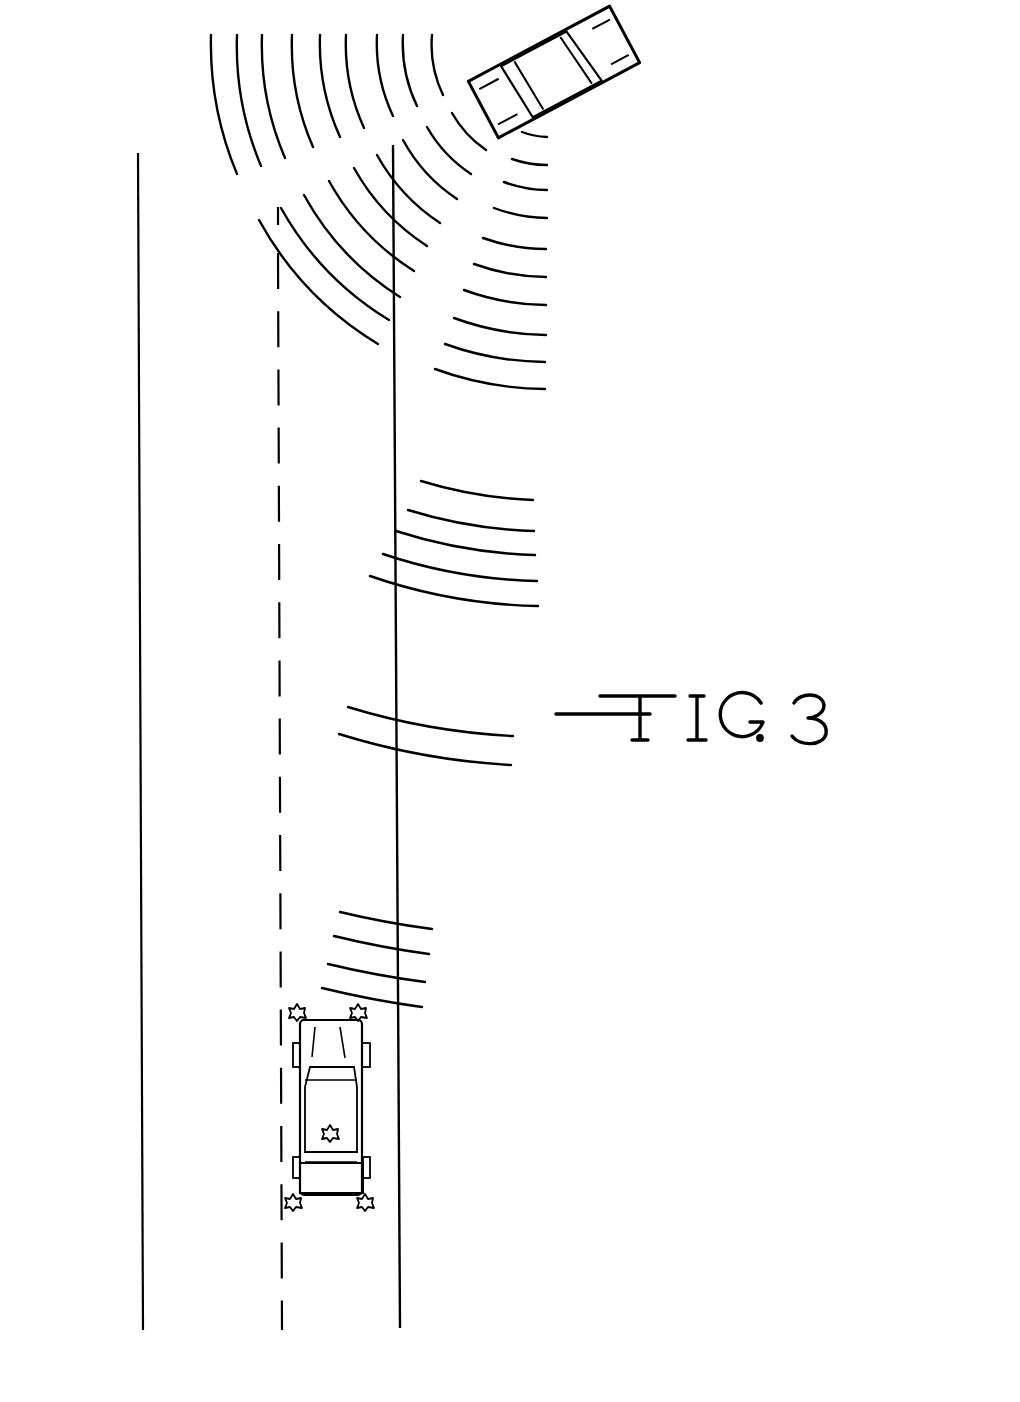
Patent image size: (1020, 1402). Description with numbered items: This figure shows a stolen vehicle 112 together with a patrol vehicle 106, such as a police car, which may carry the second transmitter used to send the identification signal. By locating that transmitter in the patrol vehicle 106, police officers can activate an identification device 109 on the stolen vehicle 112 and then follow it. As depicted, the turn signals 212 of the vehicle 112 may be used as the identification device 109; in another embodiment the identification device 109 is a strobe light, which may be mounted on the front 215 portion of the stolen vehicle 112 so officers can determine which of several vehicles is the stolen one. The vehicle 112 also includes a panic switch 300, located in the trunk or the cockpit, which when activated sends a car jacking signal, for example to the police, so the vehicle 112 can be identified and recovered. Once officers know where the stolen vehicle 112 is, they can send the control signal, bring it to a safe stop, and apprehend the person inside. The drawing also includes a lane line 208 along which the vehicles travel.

The patrol vehicle 106 is at (613, 73).
The identification device 109 is at (293, 1005).
The stolen vehicle 112 is at (298, 1112).
The lane line 208 is at (346, 1277).
The turn signals 212 is at (298, 1032).
The front portion 215 is at (302, 969).
The panic switch 300 is at (300, 1075).